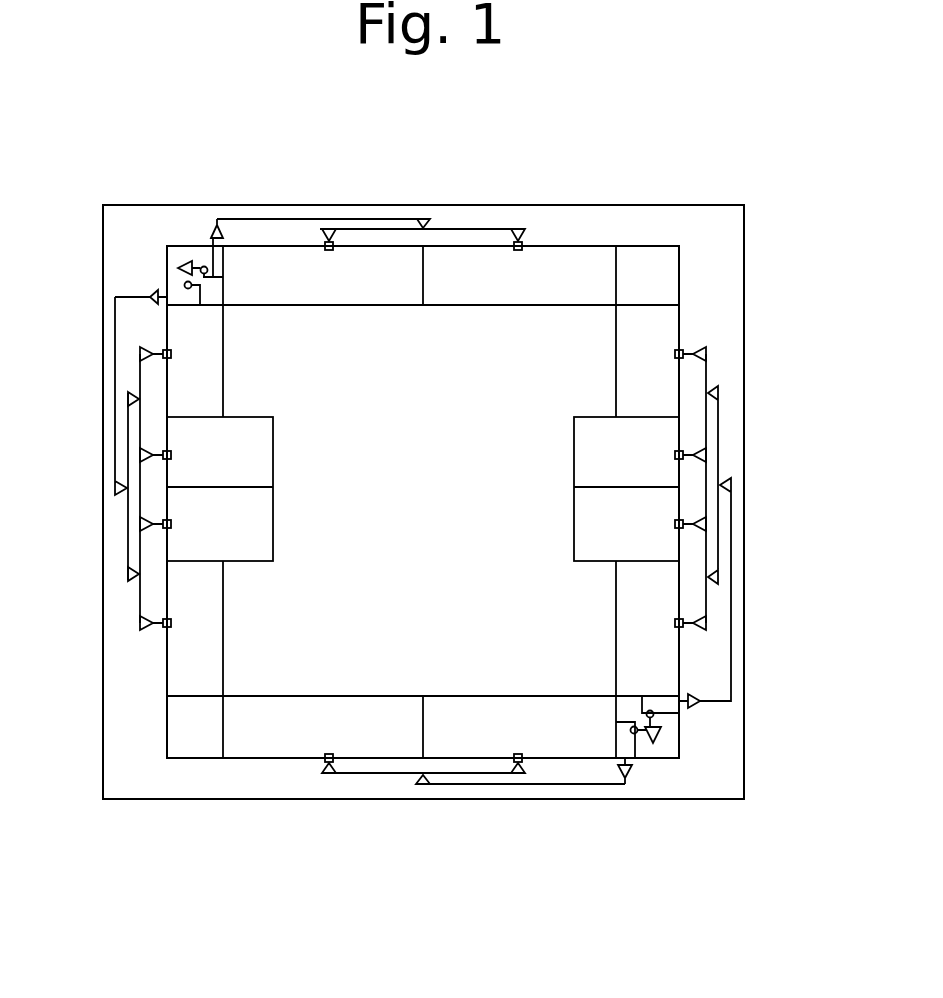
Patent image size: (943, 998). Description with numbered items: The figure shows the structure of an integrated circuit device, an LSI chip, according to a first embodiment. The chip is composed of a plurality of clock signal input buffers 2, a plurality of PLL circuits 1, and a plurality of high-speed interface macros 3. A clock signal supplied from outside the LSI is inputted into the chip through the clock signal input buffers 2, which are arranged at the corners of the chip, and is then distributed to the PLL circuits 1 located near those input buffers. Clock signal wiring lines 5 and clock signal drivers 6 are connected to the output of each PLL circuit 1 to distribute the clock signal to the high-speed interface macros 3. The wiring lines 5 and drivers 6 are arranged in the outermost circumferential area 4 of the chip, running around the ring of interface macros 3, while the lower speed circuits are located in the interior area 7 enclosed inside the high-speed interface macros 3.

The PLL circuit 1 is at (206, 252).
The clock signal input buffer 2 is at (182, 262).
The interface macro 3 is at (208, 352).
The outermost circumferential area 4 is at (728, 270).
The clock signal wiring line 5 is at (300, 220).
The clock signal driver 6 is at (148, 300).
The interior area 7 is at (432, 514).